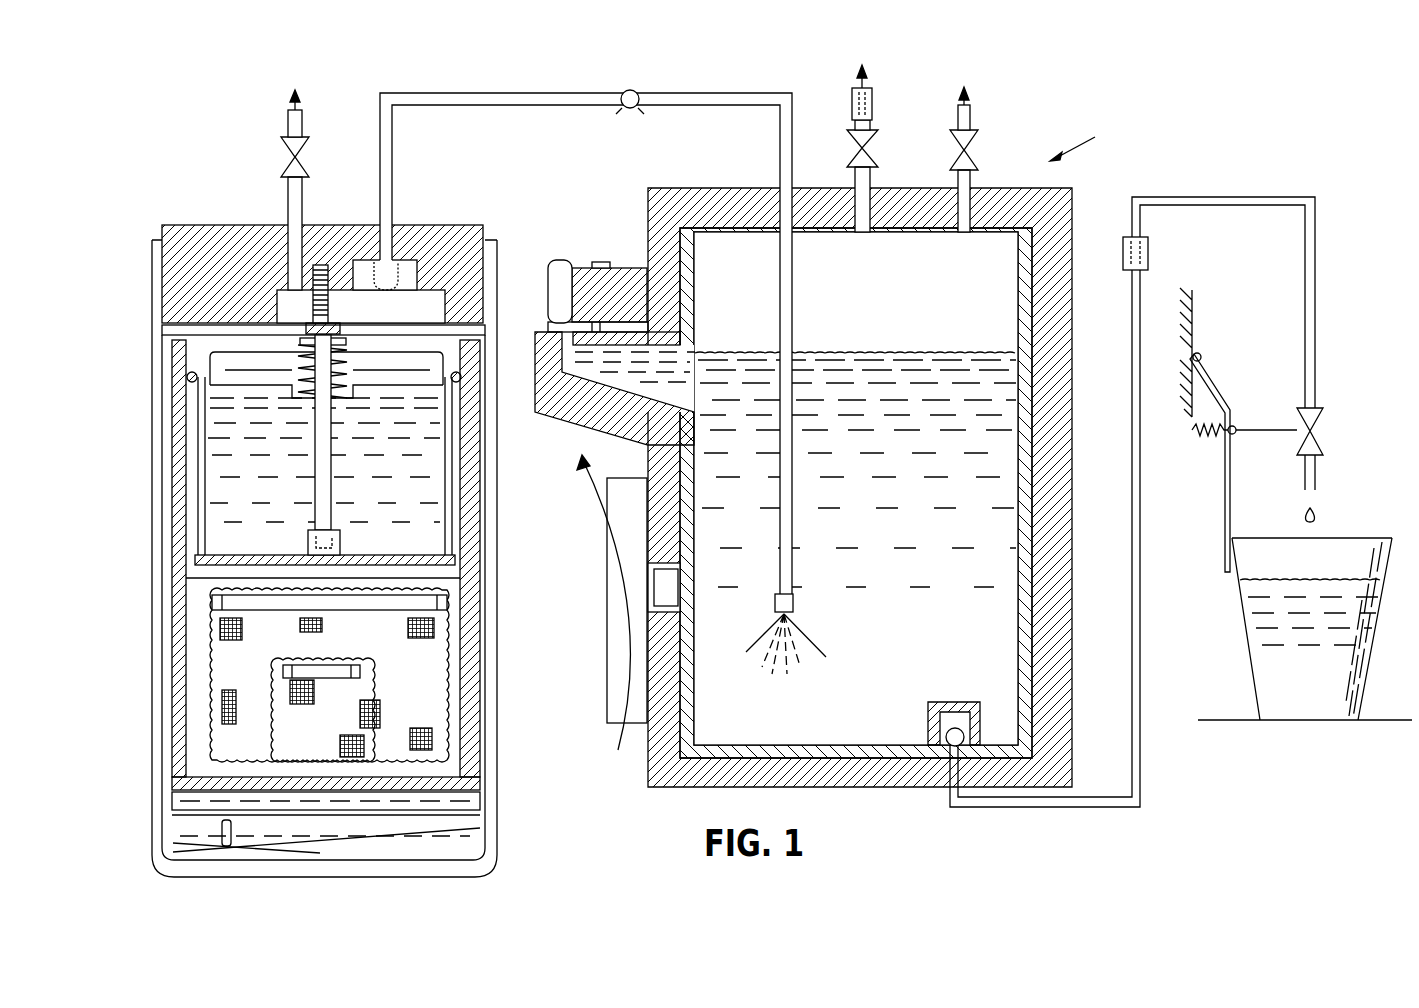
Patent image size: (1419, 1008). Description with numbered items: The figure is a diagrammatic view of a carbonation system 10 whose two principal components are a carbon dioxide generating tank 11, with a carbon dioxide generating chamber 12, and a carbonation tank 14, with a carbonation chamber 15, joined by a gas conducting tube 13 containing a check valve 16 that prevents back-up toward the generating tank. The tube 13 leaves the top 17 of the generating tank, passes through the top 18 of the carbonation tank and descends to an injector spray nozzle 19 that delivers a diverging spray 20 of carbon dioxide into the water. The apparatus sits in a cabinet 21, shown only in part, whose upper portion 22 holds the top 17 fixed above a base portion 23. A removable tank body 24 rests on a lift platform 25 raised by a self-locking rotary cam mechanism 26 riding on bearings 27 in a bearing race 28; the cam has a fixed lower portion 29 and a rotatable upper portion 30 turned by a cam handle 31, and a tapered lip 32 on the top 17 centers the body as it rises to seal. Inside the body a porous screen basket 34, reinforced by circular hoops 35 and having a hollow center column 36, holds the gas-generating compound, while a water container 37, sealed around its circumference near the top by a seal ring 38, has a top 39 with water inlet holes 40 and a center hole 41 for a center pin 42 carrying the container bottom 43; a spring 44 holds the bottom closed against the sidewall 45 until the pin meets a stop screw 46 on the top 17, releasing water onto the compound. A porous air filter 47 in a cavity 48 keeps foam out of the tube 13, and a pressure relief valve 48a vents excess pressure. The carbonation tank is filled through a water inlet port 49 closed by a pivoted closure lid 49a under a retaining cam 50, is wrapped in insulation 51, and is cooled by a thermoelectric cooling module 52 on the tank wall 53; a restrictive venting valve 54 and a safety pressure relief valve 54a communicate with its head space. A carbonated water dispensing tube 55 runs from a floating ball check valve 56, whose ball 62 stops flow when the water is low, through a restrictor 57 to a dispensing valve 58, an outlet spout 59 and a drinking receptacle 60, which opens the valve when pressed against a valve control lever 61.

The carbonation system 10 is at (1090, 140).
The carbon dioxide generating tank 11 is at (395, 225).
The carbon dioxide generating chamber 12 is at (455, 608).
The gas conducting tube 13 is at (535, 93).
The carbonation tank 14 is at (1072, 390).
The carbonation chamber 15 is at (1018, 472).
The check valve 16 is at (636, 92).
The top 17 is at (232, 225).
The top 18 is at (736, 196).
The injector spray nozzle 19 is at (775, 606).
The diverging spray 20 is at (800, 632).
The cabinet 21 is at (165, 365).
The upper portion 22 is at (155, 322).
The base portion 23 is at (438, 877).
The tank body 24 is at (158, 488).
The lift platform 25 is at (478, 801).
The rotary cam mechanism 26 is at (395, 855).
The bearings 27 is at (480, 830).
The bearing race 28 is at (173, 843).
The fixed lower portion 29 is at (345, 855).
The rotatable upper portion 30 is at (275, 832).
The cam handle 31 is at (228, 848).
The tapered lip 32 is at (165, 330).
The porous screen basket 34 is at (450, 700).
The circular hoops 35 is at (333, 665).
The hollow center column 36 is at (275, 712).
The water container 37 is at (466, 518).
The pivot 38 is at (190, 380).
The top 39 is at (222, 378).
The water inlet holes 40 is at (250, 398).
The center hole 41 is at (316, 398).
The center pin 42 is at (315, 492).
The bottom 43 is at (350, 555).
The spring 44 is at (346, 356).
The sidewall 45 is at (452, 472).
The stop screw 46 is at (330, 300).
The porous air filter 47 is at (418, 272).
The cavity 48 is at (445, 316).
The pressure relief valve 48a is at (284, 158).
The water inlet port 49 is at (632, 374).
The pivoted closure lid 49a is at (560, 260).
The retaining cam 50 is at (610, 268).
The insulation 51 is at (1072, 208).
The thermoelectric cooling module 52 is at (609, 602).
The tank wall 53 is at (683, 580).
The restrictive venting valve 54 is at (870, 150).
The safety pressure relief valve 54a is at (970, 150).
The carbonated water dispensing tube 55 is at (1140, 632).
The floating ball check valve 56 is at (945, 702).
The restrictor 57 is at (1148, 263).
The dispensing valve 58 is at (1323, 431).
The outlet spout 59 is at (1316, 478).
The drinking receptacle 60 is at (1262, 680).
The valve control lever 61 is at (1225, 510).
The ball 62 is at (946, 737).